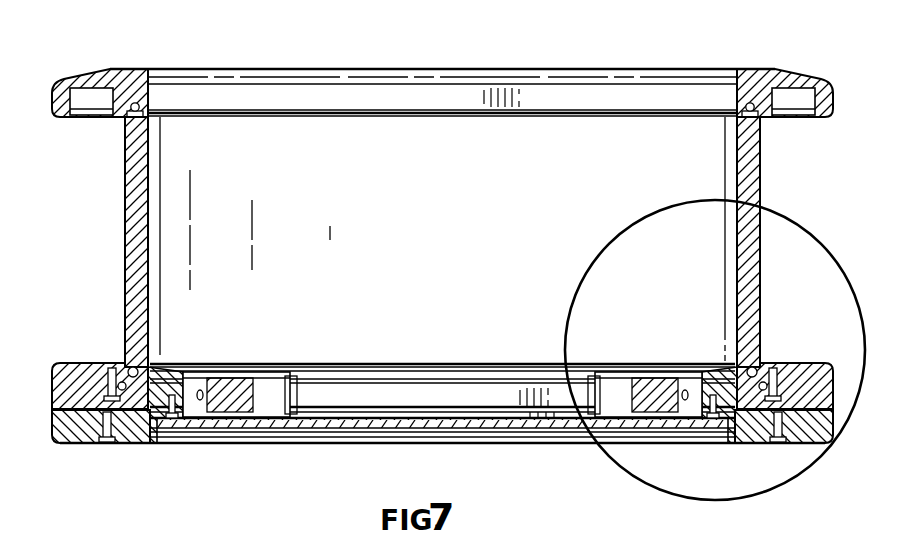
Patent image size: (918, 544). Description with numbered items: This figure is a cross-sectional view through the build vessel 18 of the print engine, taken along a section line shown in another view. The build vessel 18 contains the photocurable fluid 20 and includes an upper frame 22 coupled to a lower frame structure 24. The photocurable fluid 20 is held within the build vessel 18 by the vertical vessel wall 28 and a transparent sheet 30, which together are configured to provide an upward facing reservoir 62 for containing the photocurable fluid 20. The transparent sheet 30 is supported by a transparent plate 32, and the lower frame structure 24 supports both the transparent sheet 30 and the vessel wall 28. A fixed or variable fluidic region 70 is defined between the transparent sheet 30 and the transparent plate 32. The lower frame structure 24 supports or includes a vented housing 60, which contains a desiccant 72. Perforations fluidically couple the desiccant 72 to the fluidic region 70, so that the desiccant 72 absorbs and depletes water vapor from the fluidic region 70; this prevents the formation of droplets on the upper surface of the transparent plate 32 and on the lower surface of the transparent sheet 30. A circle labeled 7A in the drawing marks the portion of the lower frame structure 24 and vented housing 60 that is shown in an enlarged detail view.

The build vessel 18 is at (520, 56).
The upper frame 22 is at (832, 96).
The vessel wall 28 is at (126, 240).
The lower frame structure 24 is at (42, 357).
The vented housing 60 is at (165, 382).
The reservoir 62 is at (340, 330).
The photocurable fluid 20 is at (366, 330).
The transparent sheet 30 is at (428, 364).
The transparent plate 32 is at (348, 424).
The fluidic region 70 is at (488, 400).
The desiccant 72 is at (236, 408).
The detail view boundary 7A is at (815, 226).